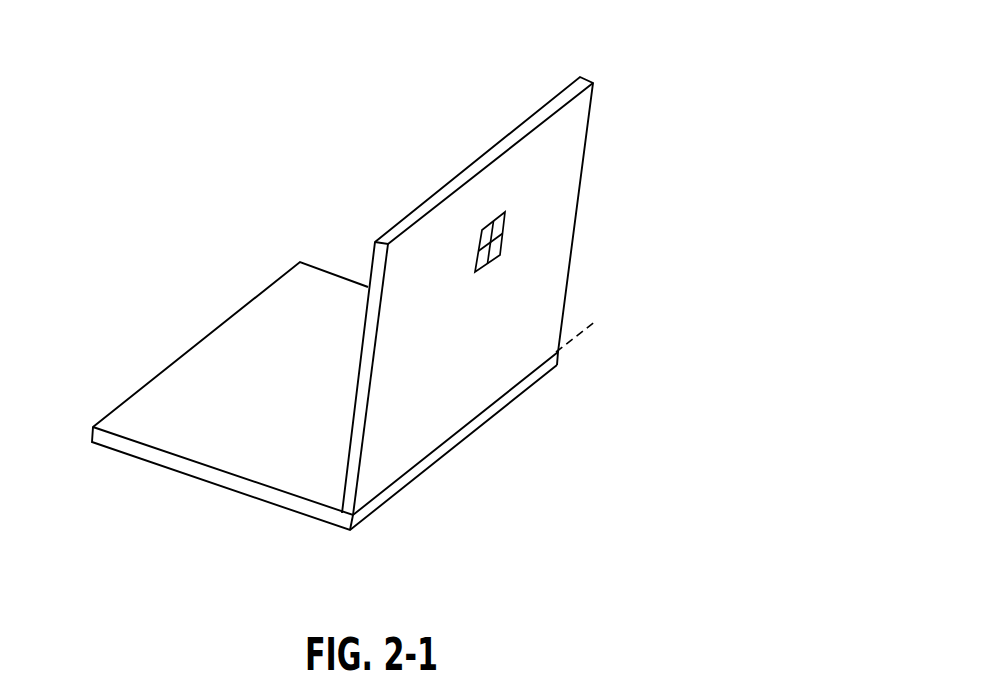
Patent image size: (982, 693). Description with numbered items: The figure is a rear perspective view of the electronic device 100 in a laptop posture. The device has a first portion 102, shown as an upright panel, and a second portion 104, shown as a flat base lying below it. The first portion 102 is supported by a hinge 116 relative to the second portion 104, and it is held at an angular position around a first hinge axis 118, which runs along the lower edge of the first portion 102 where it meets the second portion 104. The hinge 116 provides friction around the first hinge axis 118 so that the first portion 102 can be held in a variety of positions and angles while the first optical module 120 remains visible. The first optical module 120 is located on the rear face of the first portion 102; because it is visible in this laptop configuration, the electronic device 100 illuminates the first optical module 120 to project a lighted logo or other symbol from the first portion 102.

The electronic device 100 is at (650, 42).
The first portion 102 is at (413, 212).
The second portion 104 is at (195, 378).
The hinge 116 is at (282, 530).
The first hinge axis 118 is at (580, 333).
The first optical module 120 is at (503, 233).